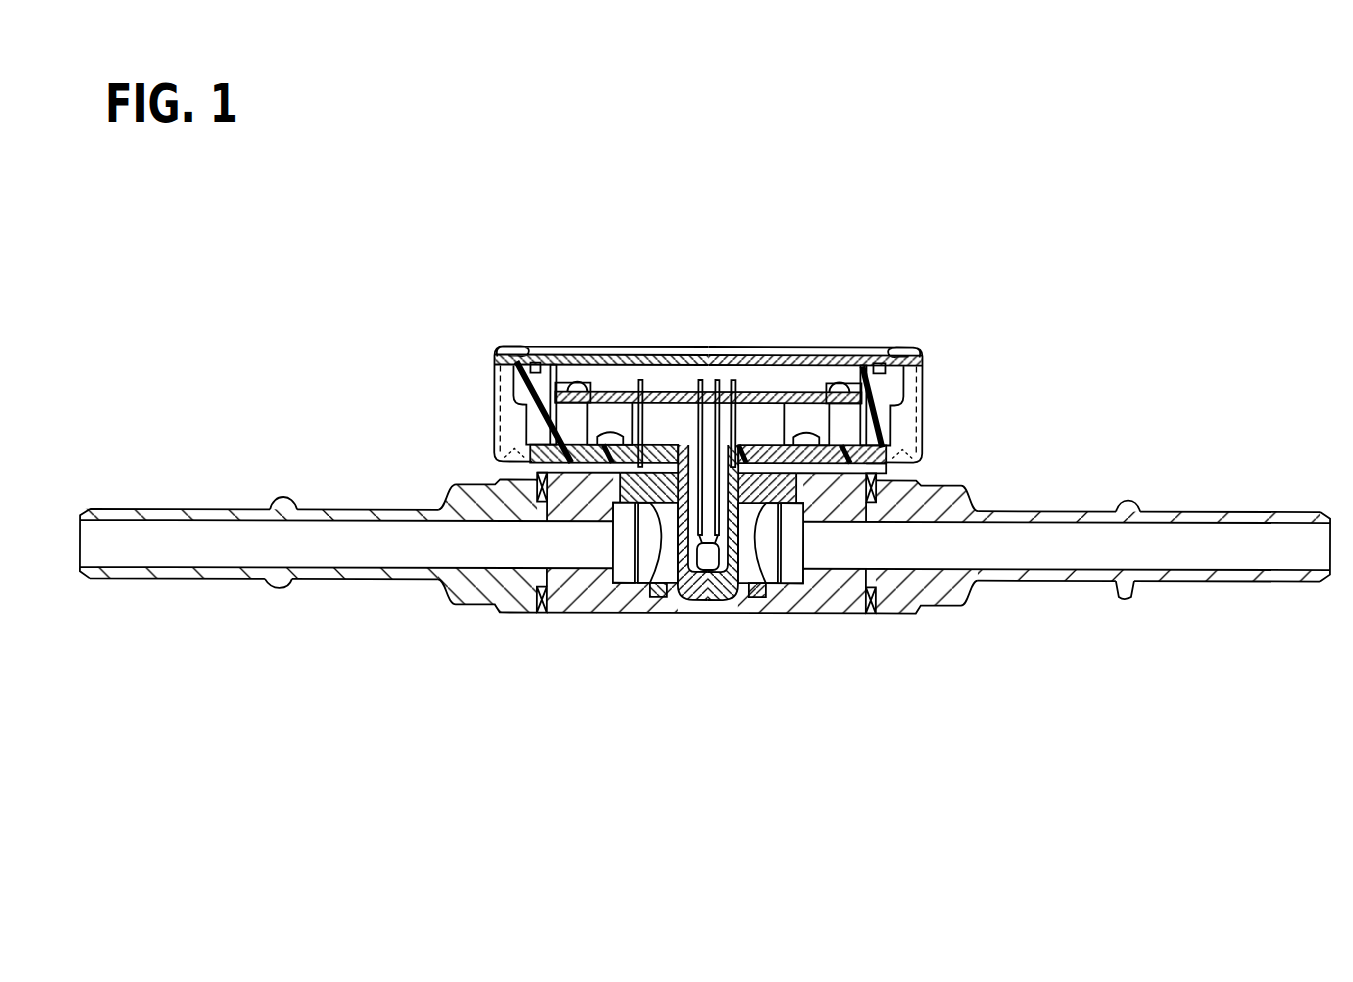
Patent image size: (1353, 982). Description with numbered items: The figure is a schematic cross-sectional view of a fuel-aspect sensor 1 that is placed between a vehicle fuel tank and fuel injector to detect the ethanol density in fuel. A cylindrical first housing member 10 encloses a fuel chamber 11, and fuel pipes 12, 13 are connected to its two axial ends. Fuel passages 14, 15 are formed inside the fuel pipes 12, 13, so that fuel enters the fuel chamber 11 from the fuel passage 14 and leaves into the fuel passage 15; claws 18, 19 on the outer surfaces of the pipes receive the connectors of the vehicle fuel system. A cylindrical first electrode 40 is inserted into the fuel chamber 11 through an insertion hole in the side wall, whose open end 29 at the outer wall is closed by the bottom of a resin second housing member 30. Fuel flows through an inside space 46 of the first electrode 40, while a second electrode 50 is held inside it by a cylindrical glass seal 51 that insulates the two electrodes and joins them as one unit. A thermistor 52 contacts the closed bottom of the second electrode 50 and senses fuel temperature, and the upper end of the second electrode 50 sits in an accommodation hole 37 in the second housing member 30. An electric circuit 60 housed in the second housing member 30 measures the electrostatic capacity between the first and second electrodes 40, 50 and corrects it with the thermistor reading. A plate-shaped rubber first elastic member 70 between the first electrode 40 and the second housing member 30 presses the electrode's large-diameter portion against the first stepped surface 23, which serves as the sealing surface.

The fuel-aspect sensor 1 is at (481, 285).
The first housing member 10 is at (583, 600).
The fuel chamber 11 is at (647, 562).
The fuel pipe 12 is at (470, 590).
The fuel pipe 13 is at (940, 590).
The fuel passage 14 is at (188, 543).
The fuel passage 15 is at (1262, 543).
The claw 18 is at (283, 590).
The claw 19 is at (1128, 598).
The first stepped surface 23 is at (557, 450).
The open end 29 is at (873, 471).
The second housing member 30 is at (887, 393).
The accommodation hole 37 is at (746, 392).
The first electrode 40 is at (676, 580).
The inside space 46 is at (688, 596).
The second electrode 50 is at (710, 558).
The glass seal 51 is at (560, 492).
The thermistor 52 is at (740, 588).
The electric circuit 60 is at (620, 392).
The first elastic member 70 is at (764, 447).